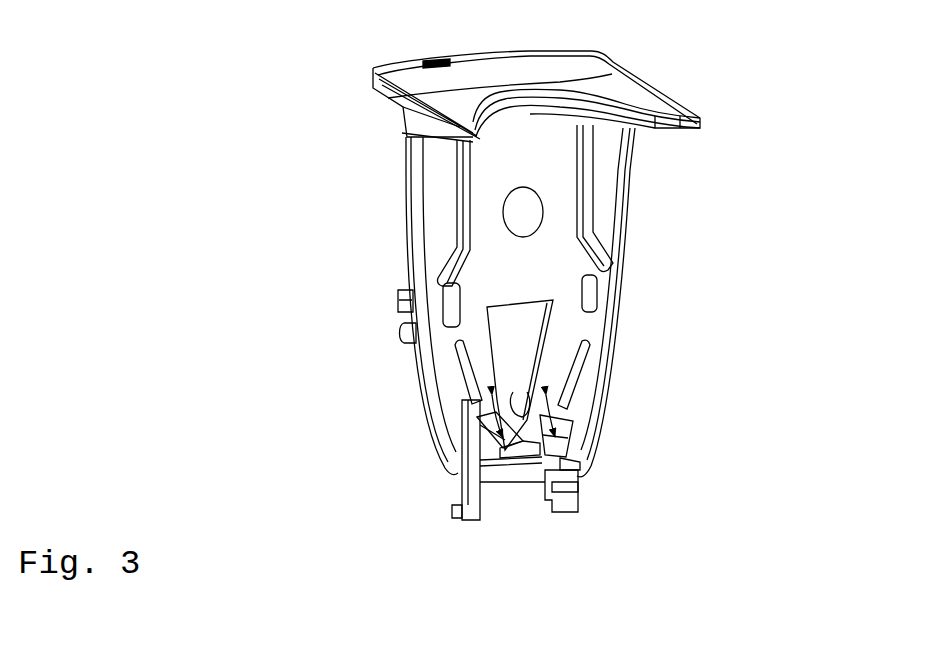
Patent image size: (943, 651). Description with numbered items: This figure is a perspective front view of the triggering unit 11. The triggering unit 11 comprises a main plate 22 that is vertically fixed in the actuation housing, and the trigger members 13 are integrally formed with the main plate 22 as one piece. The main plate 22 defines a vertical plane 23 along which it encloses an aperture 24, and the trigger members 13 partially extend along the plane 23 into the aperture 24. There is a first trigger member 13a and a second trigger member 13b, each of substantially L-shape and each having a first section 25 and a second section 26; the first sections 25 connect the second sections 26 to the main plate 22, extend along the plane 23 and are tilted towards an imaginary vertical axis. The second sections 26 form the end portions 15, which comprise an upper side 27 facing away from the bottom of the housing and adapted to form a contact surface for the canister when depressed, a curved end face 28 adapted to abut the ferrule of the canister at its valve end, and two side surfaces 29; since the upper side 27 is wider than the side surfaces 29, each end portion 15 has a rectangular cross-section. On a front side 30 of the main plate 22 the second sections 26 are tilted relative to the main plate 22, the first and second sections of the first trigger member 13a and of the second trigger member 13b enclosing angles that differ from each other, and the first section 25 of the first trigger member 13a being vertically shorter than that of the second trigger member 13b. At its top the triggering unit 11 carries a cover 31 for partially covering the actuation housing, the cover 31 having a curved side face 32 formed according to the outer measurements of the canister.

The triggering unit 11 is at (712, 100).
The trigger members 13 is at (532, 419).
The first trigger member 13a is at (485, 383).
The second trigger member 13b is at (555, 381).
The end portions 15 is at (573, 483).
The main plate 22 is at (610, 217).
The vertical plane 23 is at (430, 244).
The aperture 24 is at (528, 325).
The first section 25 is at (472, 372).
The second section 26 is at (486, 444).
The upper side 27 is at (580, 447).
The curved end face 28 is at (519, 448).
The side surfaces 29 is at (490, 413).
The front side 30 is at (440, 203).
The cover 31 is at (572, 87).
The curved side face 32 is at (515, 102).